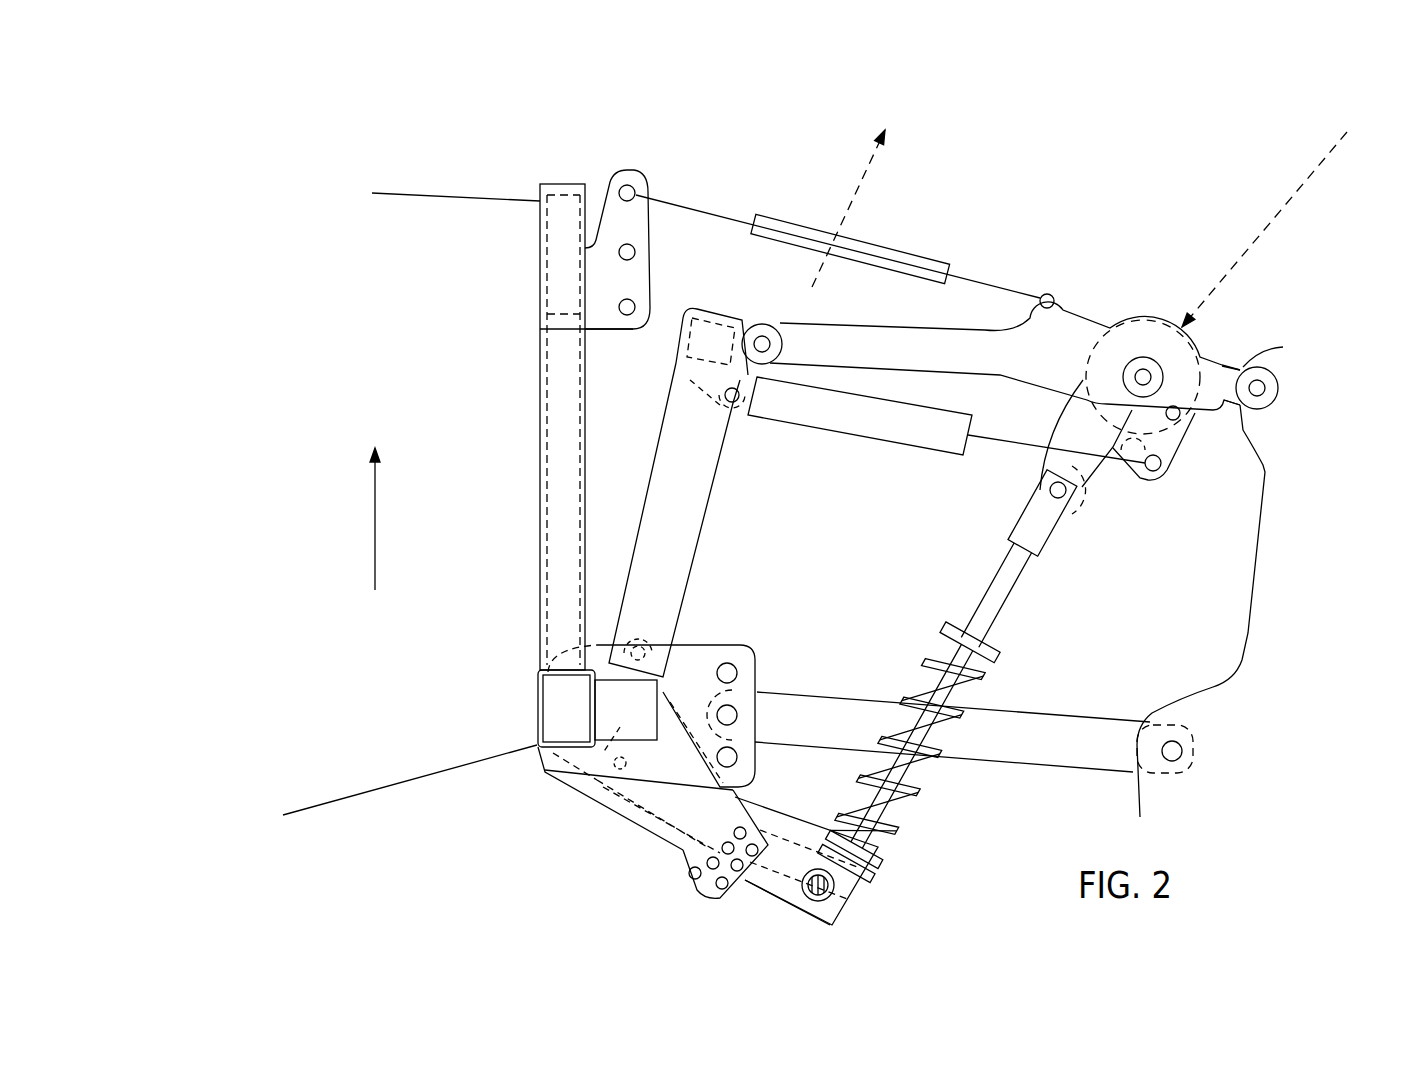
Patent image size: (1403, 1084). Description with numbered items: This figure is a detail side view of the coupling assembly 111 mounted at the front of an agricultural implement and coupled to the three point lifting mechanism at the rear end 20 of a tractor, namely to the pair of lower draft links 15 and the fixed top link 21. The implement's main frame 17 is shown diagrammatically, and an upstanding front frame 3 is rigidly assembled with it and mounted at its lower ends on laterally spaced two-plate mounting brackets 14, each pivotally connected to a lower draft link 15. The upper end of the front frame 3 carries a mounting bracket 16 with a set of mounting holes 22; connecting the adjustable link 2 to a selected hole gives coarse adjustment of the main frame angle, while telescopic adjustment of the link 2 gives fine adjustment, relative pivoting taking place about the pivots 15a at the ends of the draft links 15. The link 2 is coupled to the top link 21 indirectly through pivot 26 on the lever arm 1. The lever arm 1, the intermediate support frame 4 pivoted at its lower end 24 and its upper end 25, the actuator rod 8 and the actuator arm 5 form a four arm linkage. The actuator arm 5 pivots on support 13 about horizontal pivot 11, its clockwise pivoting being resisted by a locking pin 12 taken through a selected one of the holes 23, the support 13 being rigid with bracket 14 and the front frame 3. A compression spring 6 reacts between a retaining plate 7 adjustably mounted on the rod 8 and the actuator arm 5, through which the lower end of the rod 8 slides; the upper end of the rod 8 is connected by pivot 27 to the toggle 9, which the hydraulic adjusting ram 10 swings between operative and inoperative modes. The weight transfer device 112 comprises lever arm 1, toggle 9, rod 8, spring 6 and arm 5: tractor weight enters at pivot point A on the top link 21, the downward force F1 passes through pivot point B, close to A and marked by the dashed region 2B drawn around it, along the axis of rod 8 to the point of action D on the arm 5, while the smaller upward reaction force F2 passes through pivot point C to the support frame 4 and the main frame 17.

The lever arm 1 is at (1078, 327).
The adjustable link 2 is at (840, 235).
The pivot region 2B is at (1148, 372).
The front frame 3 is at (558, 374).
The intermediate support frame 4 is at (678, 445).
The actuator arm 5 is at (783, 877).
The compression spring 6 is at (903, 697).
The retaining plate 7 is at (940, 628).
The actuator rod 8 is at (1000, 578).
The toggle 9 is at (1080, 478).
The hydraulic adjusting ram 10 is at (858, 425).
The horizontal pivot 11 is at (620, 763).
The locking pin 12 is at (713, 862).
The support 13 is at (603, 813).
The mounting bracket 14 is at (700, 660).
The lower draft link 15 is at (835, 717).
The pivot 15a is at (749, 752).
The mounting bracket 16 is at (610, 208).
The main frame 17 is at (387, 737).
The rear end of a tractor 20 is at (1312, 563).
The top link 21 is at (1265, 388).
The mounting holes 22 is at (632, 190).
The holes 23 is at (695, 874).
The lower end 24 is at (645, 655).
The upper end 25 is at (720, 310).
The pivot 26 is at (1045, 293).
The pivot 27 is at (1066, 517).
The coupling/mounting assembly 111 is at (818, 570).
The weight transfer device 112 is at (780, 867).
The pivot point A is at (1256, 383).
The pivot point B is at (1141, 371).
The pivot point C is at (762, 336).
The point of action D is at (835, 895).
The downward force F1 is at (1276, 214).
The upward reaction force F2 is at (861, 193).